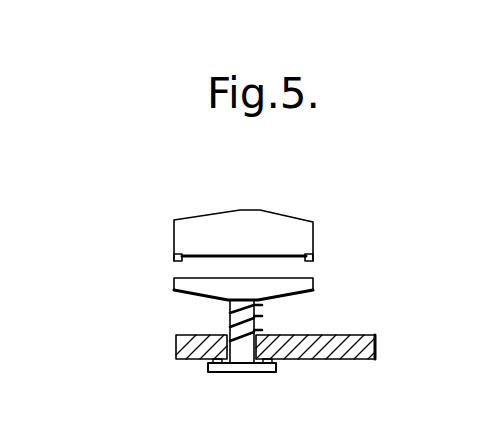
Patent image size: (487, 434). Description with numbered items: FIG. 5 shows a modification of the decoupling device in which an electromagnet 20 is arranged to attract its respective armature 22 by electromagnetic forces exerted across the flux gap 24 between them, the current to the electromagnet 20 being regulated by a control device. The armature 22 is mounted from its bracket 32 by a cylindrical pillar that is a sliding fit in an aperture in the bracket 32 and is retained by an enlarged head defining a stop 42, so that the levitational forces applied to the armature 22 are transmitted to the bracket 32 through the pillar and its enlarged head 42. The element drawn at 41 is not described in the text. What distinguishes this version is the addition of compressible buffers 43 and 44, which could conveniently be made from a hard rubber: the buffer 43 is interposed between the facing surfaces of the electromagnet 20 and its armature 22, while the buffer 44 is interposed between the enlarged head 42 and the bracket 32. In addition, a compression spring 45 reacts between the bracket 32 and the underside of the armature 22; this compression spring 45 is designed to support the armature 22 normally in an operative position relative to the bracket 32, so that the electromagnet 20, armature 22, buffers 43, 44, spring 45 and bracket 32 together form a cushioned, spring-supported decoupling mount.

The electromagnet 20 is at (231, 215).
The armature 22 is at (313, 285).
The flux gap 24 is at (300, 269).
The bracket 32 is at (377, 345).
The screw shaft 41 is at (262, 336).
The enlarged head 42 is at (258, 373).
The compressible buffer 43 is at (174, 259).
The compressible buffer 44 is at (205, 362).
The compression spring 45 is at (228, 315).